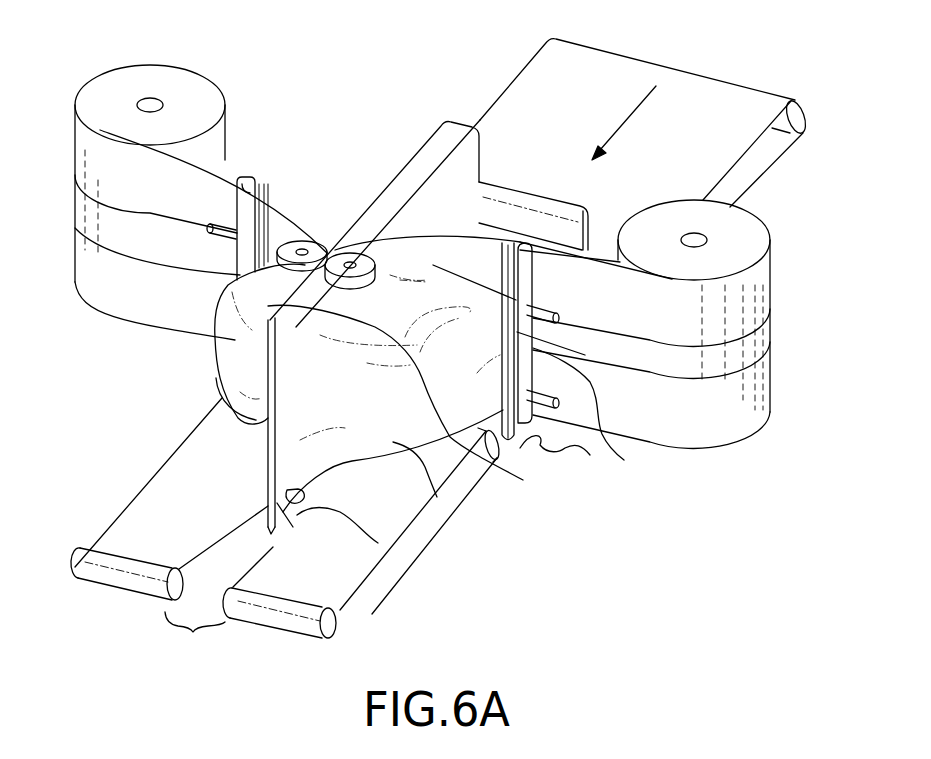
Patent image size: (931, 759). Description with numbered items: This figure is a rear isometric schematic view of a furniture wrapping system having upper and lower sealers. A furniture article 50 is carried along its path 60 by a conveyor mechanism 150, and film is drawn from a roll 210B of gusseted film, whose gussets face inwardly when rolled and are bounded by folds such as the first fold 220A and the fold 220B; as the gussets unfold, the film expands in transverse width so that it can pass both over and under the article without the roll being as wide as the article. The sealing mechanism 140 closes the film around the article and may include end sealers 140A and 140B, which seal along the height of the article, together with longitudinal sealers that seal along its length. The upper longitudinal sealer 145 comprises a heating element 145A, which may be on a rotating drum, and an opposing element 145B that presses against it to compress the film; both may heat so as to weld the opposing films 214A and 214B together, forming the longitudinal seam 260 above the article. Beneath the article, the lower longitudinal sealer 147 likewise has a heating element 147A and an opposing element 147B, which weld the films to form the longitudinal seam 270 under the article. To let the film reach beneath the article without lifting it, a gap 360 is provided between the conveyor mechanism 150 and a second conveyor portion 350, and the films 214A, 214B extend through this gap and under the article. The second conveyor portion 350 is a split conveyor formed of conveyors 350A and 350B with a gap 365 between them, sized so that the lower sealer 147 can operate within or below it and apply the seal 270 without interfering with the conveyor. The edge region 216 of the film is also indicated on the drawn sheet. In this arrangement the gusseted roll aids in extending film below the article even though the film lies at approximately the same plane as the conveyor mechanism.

The roll of gusseted film 210B is at (458, 229).
The first fold 220A is at (737, 338).
The fold 220B is at (737, 373).
The path 60 is at (620, 112).
The conveyor mechanism 150 is at (735, 107).
The furniture article 50 is at (432, 134).
The end sealer 140B is at (242, 178).
The opposing element 145B is at (292, 248).
The heating element 145A is at (349, 262).
The upper longitudinal sealer 145 is at (222, 310).
The film 214B is at (245, 383).
The membrane edge 216 is at (240, 417).
The sealing mechanism 140 is at (629, 369).
The end sealer 140A is at (517, 341).
The gap 360 is at (603, 447).
The conveyor 350B is at (155, 546).
The lower longitudinal sealer 147 is at (257, 502).
The second conveyor portion 350 is at (372, 617).
The conveyor 350A is at (330, 585).
The opposing element 147B is at (273, 570).
The heating element 147A is at (378, 543).
The longitudinal seam 260 is at (478, 450).
The film 214A is at (437, 497).
The longitudinal seam 270 is at (288, 520).
The gap 365 is at (186, 641).